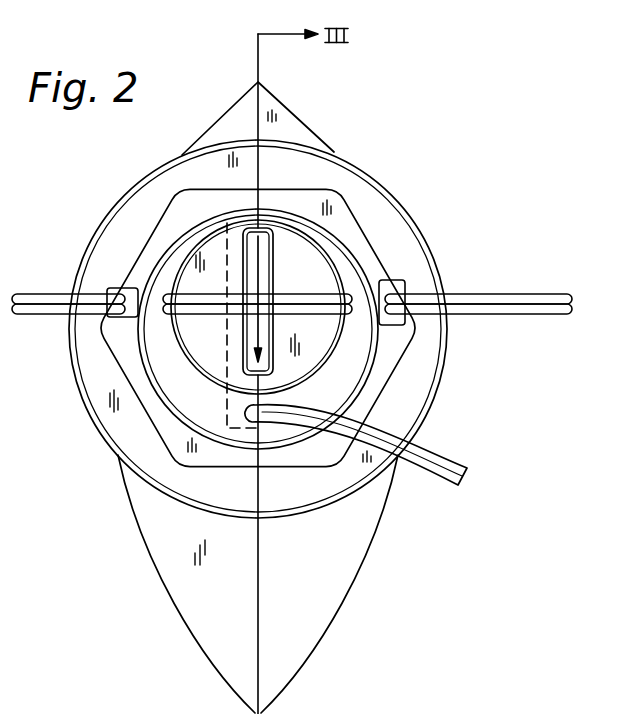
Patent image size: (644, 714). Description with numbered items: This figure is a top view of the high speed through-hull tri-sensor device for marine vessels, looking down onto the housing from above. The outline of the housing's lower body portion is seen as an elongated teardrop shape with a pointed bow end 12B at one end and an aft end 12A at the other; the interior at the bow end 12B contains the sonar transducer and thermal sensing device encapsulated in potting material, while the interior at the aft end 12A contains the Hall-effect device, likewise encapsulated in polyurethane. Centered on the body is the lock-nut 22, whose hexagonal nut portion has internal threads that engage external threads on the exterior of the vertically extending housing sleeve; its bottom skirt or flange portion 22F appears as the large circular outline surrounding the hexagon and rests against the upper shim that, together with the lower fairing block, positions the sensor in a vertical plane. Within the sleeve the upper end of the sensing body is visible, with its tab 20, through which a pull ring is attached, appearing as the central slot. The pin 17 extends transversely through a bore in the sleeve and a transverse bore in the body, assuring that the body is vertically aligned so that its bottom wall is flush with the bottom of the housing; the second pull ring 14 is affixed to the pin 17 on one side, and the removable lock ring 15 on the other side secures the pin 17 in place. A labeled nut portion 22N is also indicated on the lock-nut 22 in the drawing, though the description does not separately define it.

The aft end 12A is at (259, 84).
The bow end 12B is at (268, 711).
The second pull ring 14 is at (490, 293).
The removable lock ring 15 is at (28, 293).
The pin 17 is at (130, 289).
The tab 20 is at (275, 255).
The lock-nut 22 is at (366, 214).
The flange portion 22F is at (417, 221).
The ring portion of nut 22N is at (401, 348).